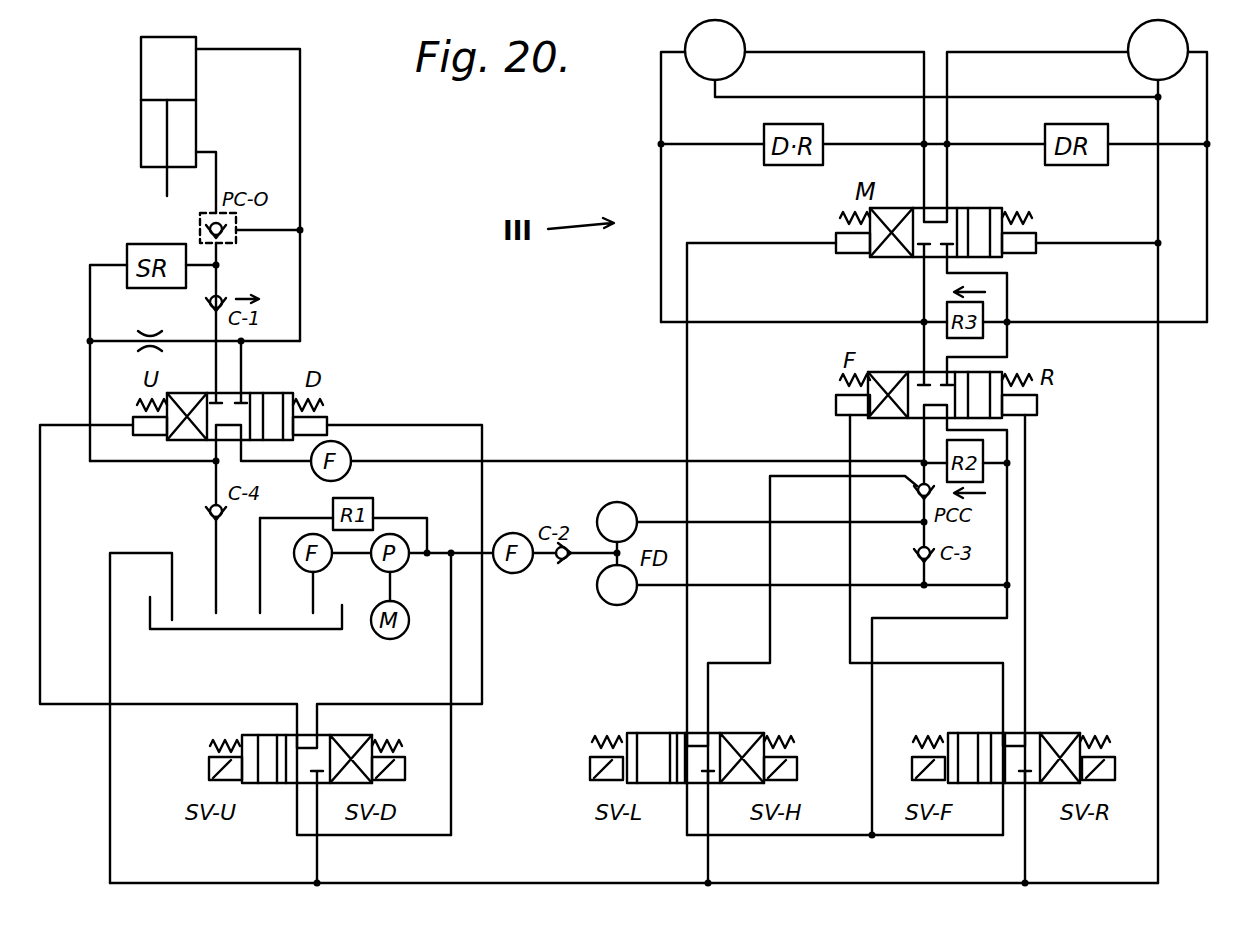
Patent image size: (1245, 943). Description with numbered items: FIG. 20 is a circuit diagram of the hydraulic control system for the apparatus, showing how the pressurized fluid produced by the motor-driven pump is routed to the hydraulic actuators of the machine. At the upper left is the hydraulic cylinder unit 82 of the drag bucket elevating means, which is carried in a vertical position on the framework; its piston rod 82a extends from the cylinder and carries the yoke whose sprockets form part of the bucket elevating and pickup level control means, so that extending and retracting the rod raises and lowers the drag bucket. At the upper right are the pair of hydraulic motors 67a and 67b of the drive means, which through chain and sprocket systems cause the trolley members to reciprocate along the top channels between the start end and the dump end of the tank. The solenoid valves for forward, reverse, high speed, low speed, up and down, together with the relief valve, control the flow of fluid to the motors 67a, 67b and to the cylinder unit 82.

The hydraulic cylinder unit 82 is at (129, 82).
The piston rod 82a is at (165, 183).
The hydraulic motor 67a is at (742, 36).
The hydraulic motor 67b is at (1130, 41).